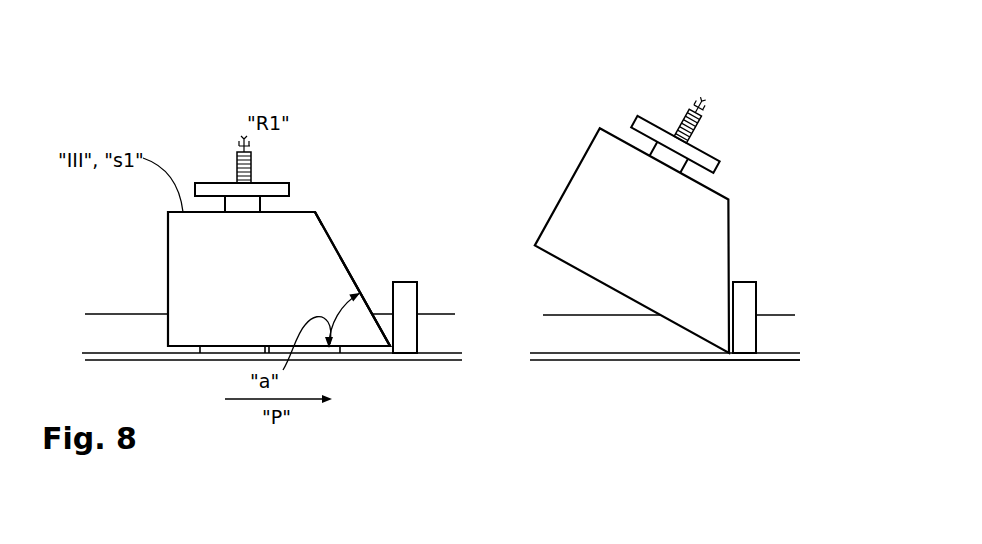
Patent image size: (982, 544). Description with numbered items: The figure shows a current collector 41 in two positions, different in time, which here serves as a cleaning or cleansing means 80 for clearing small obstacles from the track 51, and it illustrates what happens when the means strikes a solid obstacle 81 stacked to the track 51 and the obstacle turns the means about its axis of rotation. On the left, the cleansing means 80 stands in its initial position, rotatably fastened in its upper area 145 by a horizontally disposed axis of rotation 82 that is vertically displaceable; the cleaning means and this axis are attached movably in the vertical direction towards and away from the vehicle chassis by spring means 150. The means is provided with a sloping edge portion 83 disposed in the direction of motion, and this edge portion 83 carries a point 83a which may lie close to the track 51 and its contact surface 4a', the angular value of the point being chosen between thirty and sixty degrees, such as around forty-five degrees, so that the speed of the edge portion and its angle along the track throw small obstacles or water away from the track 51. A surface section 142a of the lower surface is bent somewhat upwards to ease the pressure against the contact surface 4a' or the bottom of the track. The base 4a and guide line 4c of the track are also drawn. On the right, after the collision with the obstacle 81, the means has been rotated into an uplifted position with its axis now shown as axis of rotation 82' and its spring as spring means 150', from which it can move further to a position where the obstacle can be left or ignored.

The cleansing means 80 is at (150, 239).
The axis of rotation 82 is at (287, 179).
The spring means 150 is at (206, 156).
The upper area 145 is at (306, 212).
The current collector 41 is at (312, 253).
The sloping edge portion 83 is at (352, 272).
The point 83a is at (368, 340).
The surface section 142a is at (345, 347).
The obstacle 81 is at (407, 282).
The track 51 is at (433, 327).
The guide rail 4c is at (133, 314).
The base plate 4a is at (441, 375).
The contact surface 4a' is at (755, 379).
The axis of rotation in uplifted position 82' is at (729, 151).
The spring means in uplifted position 150' is at (675, 109).